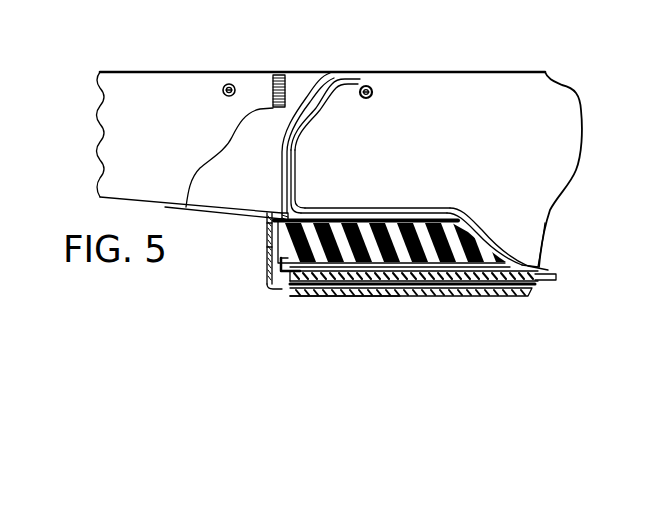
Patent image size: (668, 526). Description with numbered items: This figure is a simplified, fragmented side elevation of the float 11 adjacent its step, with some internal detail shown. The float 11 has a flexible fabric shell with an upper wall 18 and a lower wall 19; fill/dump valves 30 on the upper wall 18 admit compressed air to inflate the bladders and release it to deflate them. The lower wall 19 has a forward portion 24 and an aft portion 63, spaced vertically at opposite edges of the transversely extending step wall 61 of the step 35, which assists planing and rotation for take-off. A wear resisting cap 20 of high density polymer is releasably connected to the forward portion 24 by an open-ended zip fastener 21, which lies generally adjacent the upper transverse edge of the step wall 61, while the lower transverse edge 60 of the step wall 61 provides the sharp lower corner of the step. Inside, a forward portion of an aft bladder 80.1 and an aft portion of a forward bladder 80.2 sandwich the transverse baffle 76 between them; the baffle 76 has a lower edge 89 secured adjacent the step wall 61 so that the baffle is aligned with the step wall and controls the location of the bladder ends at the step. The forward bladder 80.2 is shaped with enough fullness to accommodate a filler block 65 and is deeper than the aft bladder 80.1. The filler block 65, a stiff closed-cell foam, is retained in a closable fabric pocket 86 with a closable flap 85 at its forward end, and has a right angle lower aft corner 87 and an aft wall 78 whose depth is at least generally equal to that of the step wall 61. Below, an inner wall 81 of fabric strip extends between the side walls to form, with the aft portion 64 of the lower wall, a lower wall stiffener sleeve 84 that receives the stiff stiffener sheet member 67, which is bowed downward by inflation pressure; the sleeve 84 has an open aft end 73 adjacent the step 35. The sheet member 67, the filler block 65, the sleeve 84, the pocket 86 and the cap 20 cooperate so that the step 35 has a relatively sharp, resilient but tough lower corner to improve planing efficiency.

The float 11 is at (176, 60).
The upper wall 18 is at (205, 72).
The fill/dump valve 30 is at (232, 84).
The transverse baffle 76 is at (318, 82).
The aft bladder 80.1 is at (225, 167).
The forward bladder 80.2 is at (463, 102).
The lower edge 89 is at (273, 211).
The closable fabric pocket 86 is at (397, 212).
The closable flap 85 is at (477, 230).
The inner wall 81 is at (540, 262).
The stiffener sheet member 67 is at (548, 277).
The lower wall stiffener sleeve 84 is at (573, 279).
The lower wall 19 is at (463, 290).
The aft portion 64 is at (540, 287).
The forward portion 24 is at (516, 305).
The wear resisting cap 20 is at (392, 304).
The filler block 65 is at (342, 252).
The right angle lower aft corner 87 is at (298, 272).
The open aft end 73 is at (270, 288).
The lower transverse edge 60 is at (284, 290).
The step 35 is at (252, 273).
The aft wall 78 is at (262, 258).
The step wall 61 is at (267, 247).
The zip fastener 21 is at (267, 223).
The aft portion 63 is at (160, 206).